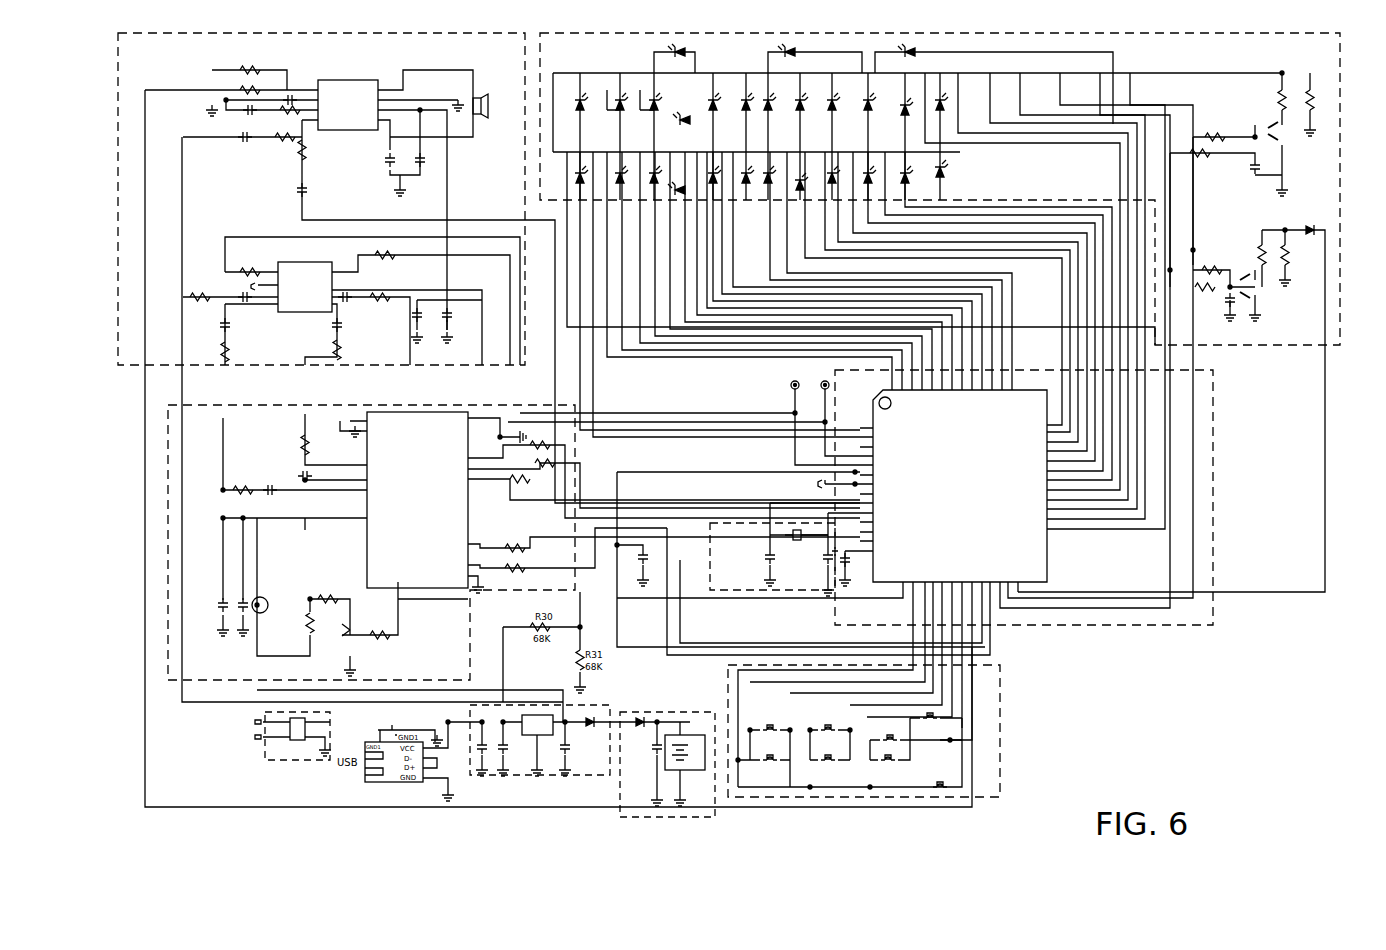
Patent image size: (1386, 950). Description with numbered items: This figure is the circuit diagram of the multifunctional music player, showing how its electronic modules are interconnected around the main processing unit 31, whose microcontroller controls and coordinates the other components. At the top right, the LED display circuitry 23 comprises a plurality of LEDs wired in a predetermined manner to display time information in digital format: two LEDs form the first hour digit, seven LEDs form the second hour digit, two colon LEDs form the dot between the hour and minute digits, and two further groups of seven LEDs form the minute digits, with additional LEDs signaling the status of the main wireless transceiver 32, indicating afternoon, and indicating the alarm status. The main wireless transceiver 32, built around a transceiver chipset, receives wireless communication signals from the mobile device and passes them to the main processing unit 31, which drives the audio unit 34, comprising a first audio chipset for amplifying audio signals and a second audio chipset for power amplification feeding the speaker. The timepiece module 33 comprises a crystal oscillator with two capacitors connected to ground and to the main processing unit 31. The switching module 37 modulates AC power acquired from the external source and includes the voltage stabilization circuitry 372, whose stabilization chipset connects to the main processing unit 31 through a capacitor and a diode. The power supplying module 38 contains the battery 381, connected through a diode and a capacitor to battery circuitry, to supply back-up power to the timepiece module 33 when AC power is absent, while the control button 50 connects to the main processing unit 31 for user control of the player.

The LED display circuitry 23 is at (1302, 343).
The main processing unit 31 is at (872, 430).
The main wireless transceiver 32 is at (187, 680).
The timepiece module 33 is at (730, 592).
The audio unit 34 is at (142, 365).
The switching module 37 is at (312, 760).
The voltage stabilization circuitry 372 is at (570, 800).
The power supplying module 38 is at (678, 777).
The battery 381 is at (700, 745).
The control button 50 is at (1000, 735).